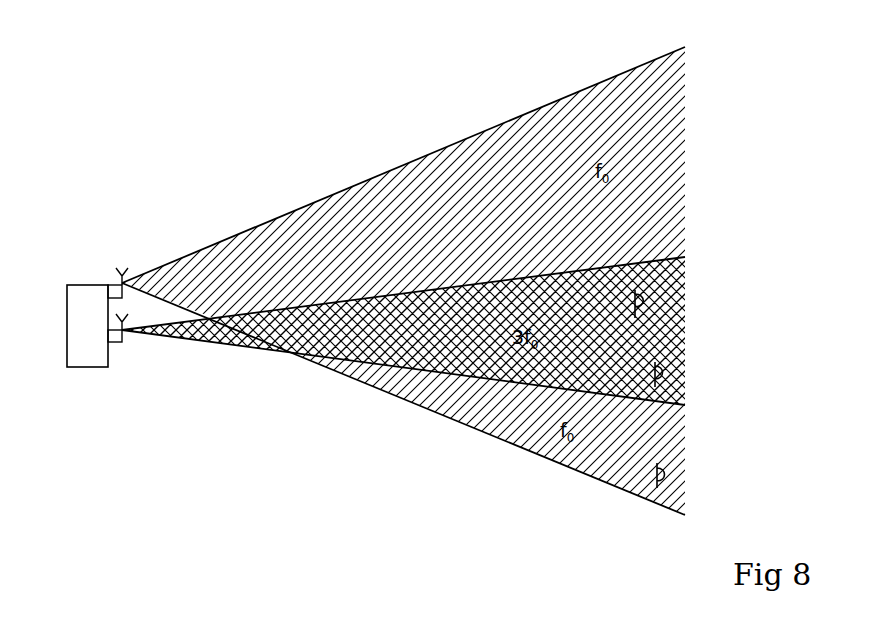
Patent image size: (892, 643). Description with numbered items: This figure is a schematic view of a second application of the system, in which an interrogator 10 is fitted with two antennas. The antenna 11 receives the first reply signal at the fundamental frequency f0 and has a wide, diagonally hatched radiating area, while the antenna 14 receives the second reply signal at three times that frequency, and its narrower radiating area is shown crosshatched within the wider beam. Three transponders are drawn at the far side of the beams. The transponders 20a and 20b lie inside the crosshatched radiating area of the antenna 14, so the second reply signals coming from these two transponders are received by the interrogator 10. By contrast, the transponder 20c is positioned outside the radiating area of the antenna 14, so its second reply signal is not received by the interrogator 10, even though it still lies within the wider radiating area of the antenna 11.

The interrogator 10 is at (67, 318).
The antenna 11 is at (117, 298).
The antenna 14 is at (112, 342).
The transponder 20a is at (644, 301).
The transponder 20b is at (662, 373).
The transponder 20c is at (664, 473).